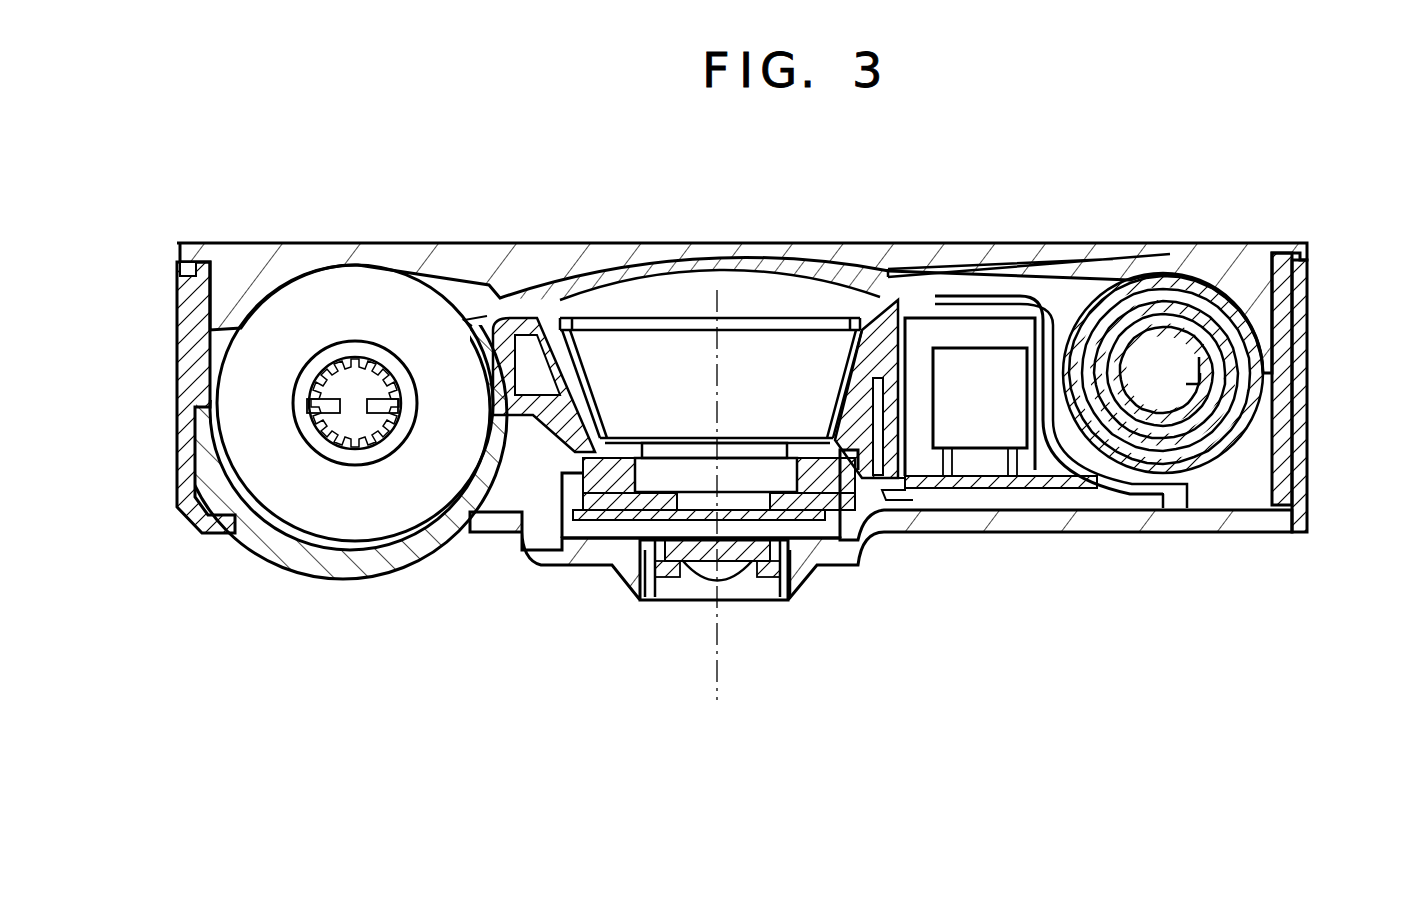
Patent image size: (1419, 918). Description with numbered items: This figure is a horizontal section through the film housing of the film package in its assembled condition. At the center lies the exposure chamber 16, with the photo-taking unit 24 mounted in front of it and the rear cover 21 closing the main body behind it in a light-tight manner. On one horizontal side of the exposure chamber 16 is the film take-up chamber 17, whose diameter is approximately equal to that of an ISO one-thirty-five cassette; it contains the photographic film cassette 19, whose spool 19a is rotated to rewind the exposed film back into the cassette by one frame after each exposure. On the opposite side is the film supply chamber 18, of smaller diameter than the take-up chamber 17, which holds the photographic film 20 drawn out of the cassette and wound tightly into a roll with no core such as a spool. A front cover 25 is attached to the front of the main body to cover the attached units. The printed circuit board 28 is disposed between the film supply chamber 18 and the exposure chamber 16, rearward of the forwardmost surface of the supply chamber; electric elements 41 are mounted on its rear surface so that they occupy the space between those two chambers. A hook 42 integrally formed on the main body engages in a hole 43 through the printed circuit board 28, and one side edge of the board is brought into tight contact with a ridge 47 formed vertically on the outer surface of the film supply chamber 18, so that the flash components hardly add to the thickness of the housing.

The exposure chamber 16 is at (602, 440).
The film take-up chamber 17 is at (224, 538).
The film supply chamber 18 is at (1215, 495).
The photographic film cassette 19 is at (368, 290).
The spool 19a is at (300, 422).
The photographic film 20 is at (1172, 262).
The rear cover 21 is at (293, 262).
The photo-taking unit 24 is at (805, 562).
The front cover 25 is at (1300, 362).
The printed circuit board 28 is at (996, 490).
The electric elements 41 is at (975, 358).
The hook 42 is at (902, 506).
The hole 43 is at (915, 472).
The ridge 47 is at (1080, 465).